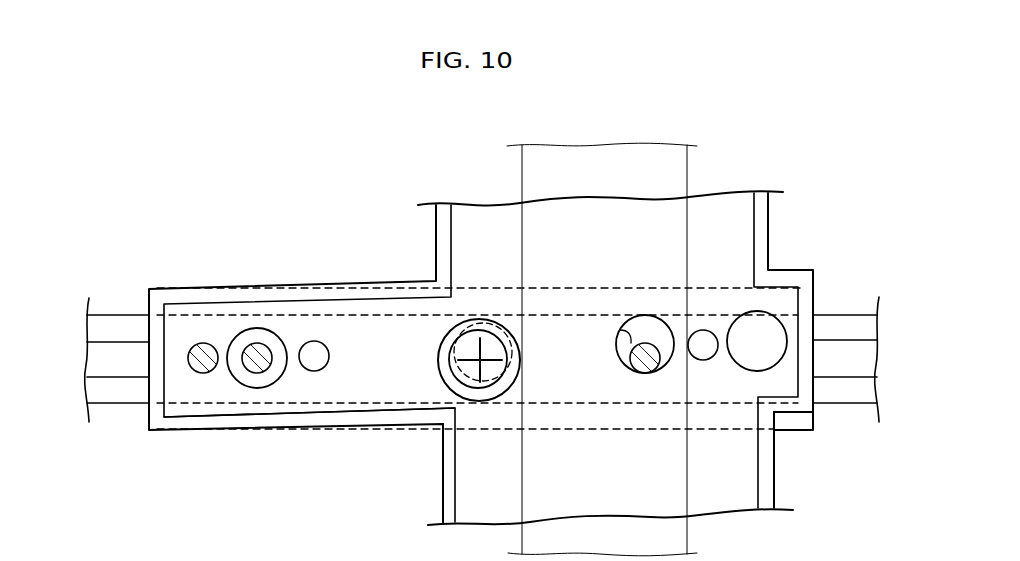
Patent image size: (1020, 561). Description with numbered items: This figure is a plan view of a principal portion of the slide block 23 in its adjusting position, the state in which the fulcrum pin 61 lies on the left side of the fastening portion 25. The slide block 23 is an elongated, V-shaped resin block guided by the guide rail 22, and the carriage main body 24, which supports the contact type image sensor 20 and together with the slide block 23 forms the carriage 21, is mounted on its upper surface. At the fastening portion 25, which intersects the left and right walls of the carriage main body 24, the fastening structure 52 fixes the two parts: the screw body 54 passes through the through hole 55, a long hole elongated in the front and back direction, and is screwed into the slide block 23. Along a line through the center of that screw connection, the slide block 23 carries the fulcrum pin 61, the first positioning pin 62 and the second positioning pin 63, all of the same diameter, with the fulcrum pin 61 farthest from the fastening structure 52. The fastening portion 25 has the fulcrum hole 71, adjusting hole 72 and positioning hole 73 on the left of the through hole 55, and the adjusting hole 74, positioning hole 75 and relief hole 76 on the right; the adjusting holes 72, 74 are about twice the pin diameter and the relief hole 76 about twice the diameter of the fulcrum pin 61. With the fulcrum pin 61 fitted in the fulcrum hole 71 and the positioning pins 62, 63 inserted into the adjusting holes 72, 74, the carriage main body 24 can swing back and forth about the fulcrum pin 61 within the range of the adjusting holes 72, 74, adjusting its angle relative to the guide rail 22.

The contact type image sensor 20 is at (700, 172).
The carriage 21 is at (370, 445).
The guide rail 22 is at (840, 390).
The slide block 23 is at (482, 430).
The carriage main body 24 is at (428, 487).
The fastening portion 25 is at (322, 416).
The fastening structure 52 is at (444, 360).
The screw body 54 is at (462, 345).
The through hole 55 is at (485, 321).
The fulcrum pin 61 is at (194, 346).
The first positioning pin 62 is at (266, 348).
The second positioning pin 63 is at (633, 370).
The fulcrum hole 71 is at (203, 358).
The adjusting hole 72 is at (252, 381).
The positioning hole 73 is at (312, 344).
The adjusting hole 74 is at (618, 341).
The positioning hole 75 is at (705, 335).
The relief hole 76 is at (754, 358).